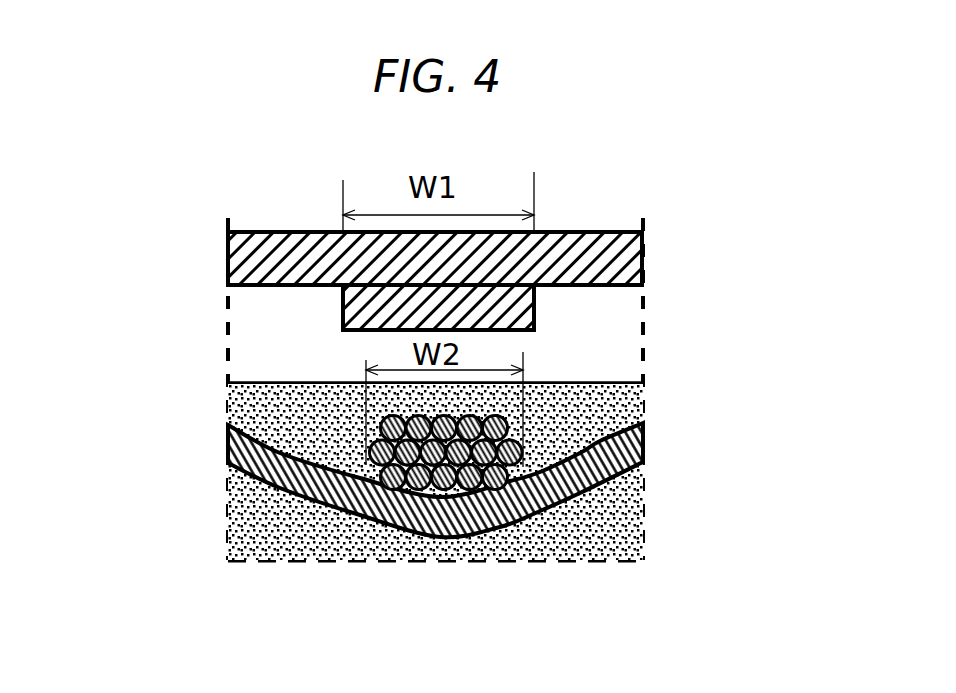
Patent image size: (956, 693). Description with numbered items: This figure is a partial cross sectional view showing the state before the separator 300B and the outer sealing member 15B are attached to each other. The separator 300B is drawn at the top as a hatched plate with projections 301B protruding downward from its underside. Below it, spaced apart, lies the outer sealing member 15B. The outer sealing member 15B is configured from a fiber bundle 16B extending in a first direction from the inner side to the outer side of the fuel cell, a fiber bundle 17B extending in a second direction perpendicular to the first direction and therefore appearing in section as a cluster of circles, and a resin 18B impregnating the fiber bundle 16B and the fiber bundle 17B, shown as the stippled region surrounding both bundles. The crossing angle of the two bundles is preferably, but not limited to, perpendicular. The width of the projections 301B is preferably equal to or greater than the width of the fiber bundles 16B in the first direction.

The separator 300B is at (598, 245).
The projections 301B is at (508, 313).
The outer sealing member 15B is at (218, 388).
The fiber bundle 16B is at (438, 513).
The fiber bundle 17B is at (507, 517).
The resin 18B is at (600, 532).